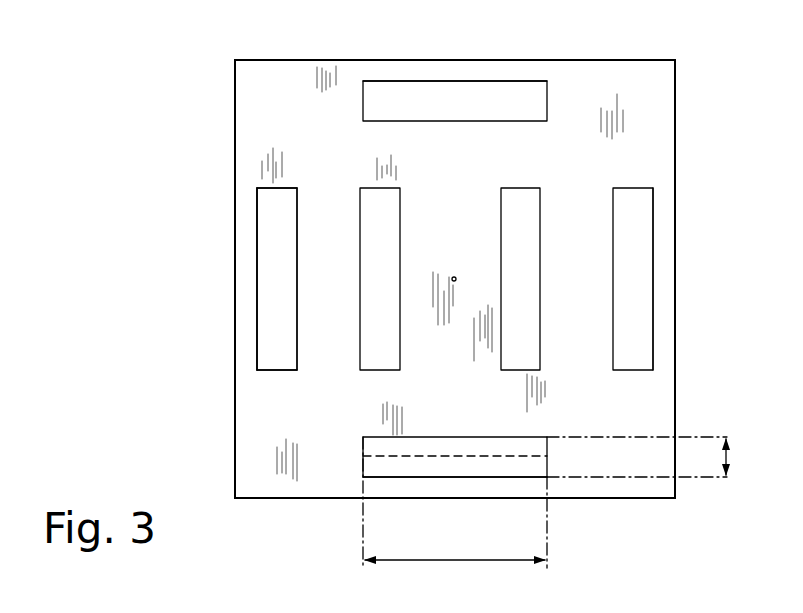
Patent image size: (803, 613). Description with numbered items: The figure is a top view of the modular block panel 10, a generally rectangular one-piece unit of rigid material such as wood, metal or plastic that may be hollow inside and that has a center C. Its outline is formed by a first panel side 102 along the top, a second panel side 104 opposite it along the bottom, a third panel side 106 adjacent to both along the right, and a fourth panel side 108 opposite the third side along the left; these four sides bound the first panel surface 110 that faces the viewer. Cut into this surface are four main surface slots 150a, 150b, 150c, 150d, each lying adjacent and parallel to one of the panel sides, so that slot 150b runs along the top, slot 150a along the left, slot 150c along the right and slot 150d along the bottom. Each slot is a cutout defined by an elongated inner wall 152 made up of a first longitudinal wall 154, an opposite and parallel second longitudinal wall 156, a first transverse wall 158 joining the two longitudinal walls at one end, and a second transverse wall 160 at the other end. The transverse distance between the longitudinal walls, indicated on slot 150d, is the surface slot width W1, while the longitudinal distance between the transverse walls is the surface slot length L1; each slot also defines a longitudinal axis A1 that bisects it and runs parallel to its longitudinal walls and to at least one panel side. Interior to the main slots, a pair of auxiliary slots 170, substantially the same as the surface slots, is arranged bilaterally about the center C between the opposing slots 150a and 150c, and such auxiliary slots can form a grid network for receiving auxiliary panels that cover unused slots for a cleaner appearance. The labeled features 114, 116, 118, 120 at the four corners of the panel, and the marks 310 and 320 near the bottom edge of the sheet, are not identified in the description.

The modular block panel 10 is at (674, 103).
The first panel side 102 is at (604, 60).
The second panel side 104 is at (626, 498).
The third panel side 106 is at (674, 403).
The fourth panel side 108 is at (235, 128).
The first panel surface 110 is at (254, 394).
The first corner 114 is at (664, 66).
The second corner 116 is at (662, 488).
The third corner 118 is at (252, 477).
The fourth corner 120 is at (250, 73).
The surface slot 150a is at (268, 236).
The surface slot 150b is at (464, 96).
The surface slot 150c is at (633, 270).
The surface slot 150d is at (496, 466).
The inner wall 152 is at (412, 81).
The first longitudinal wall 154 is at (297, 247).
The second longitudinal wall 156 is at (257, 202).
The first transverse wall 158 is at (287, 188).
The second transverse wall 160 is at (278, 372).
The auxiliary slot 170 is at (372, 300).
The center C is at (457, 279).
The longitudinal axis A1 is at (433, 456).
The surface slot width W1 is at (733, 458).
The surface slot length L1 is at (500, 562).
The element of another figure 310 is at (268, 612).
The element of another figure 320 is at (340, 608).